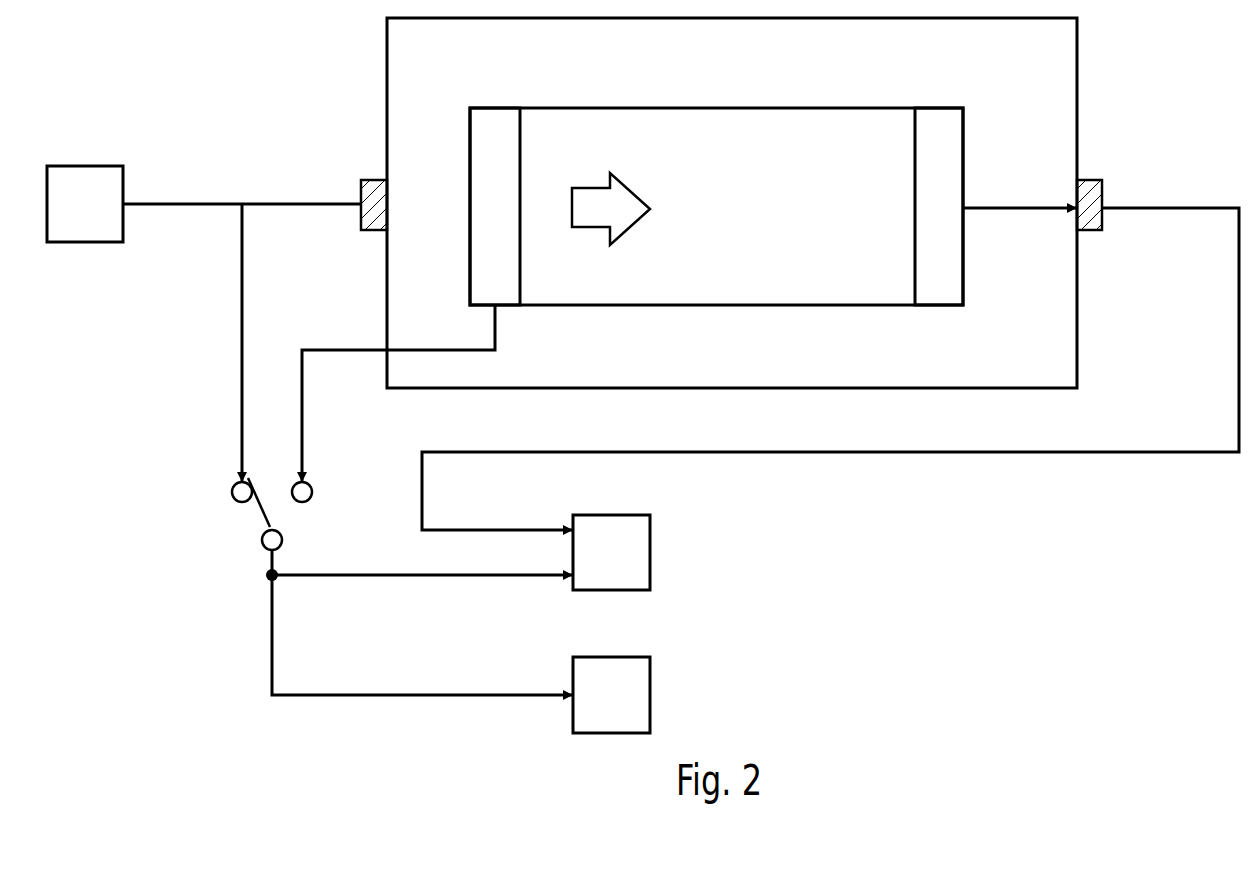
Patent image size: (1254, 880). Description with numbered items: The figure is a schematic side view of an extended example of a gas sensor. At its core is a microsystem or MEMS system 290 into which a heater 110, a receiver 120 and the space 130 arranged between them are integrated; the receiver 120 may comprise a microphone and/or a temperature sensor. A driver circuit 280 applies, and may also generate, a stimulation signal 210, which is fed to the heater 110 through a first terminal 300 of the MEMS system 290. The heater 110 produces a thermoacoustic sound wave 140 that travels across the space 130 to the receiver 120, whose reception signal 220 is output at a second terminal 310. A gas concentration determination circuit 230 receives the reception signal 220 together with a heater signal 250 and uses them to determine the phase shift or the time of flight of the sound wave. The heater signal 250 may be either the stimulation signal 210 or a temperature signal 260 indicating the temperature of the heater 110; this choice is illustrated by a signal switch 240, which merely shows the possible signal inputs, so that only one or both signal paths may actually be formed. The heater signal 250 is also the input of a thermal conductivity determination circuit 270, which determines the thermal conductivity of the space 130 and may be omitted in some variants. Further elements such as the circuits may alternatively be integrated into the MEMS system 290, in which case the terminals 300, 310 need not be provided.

The heater 110 is at (493, 108).
The receiver 120 is at (936, 108).
The space 130 is at (715, 108).
The thermoacoustic sound wave 140 is at (651, 209).
The stimulation signal 210 is at (178, 204).
The reception signal 220 is at (1016, 207).
The gas concentration determination circuit 230 is at (651, 549).
The signal switch 240 is at (258, 518).
The heater signal 250 is at (271, 623).
The temperature signal 260 is at (338, 350).
The thermal conductivity determination circuit 270 is at (651, 694).
The driver circuit 280 is at (83, 166).
The microsystem or MEMS system 290 is at (1078, 73).
The first terminal 300 is at (366, 180).
The second terminal 310 is at (1090, 180).